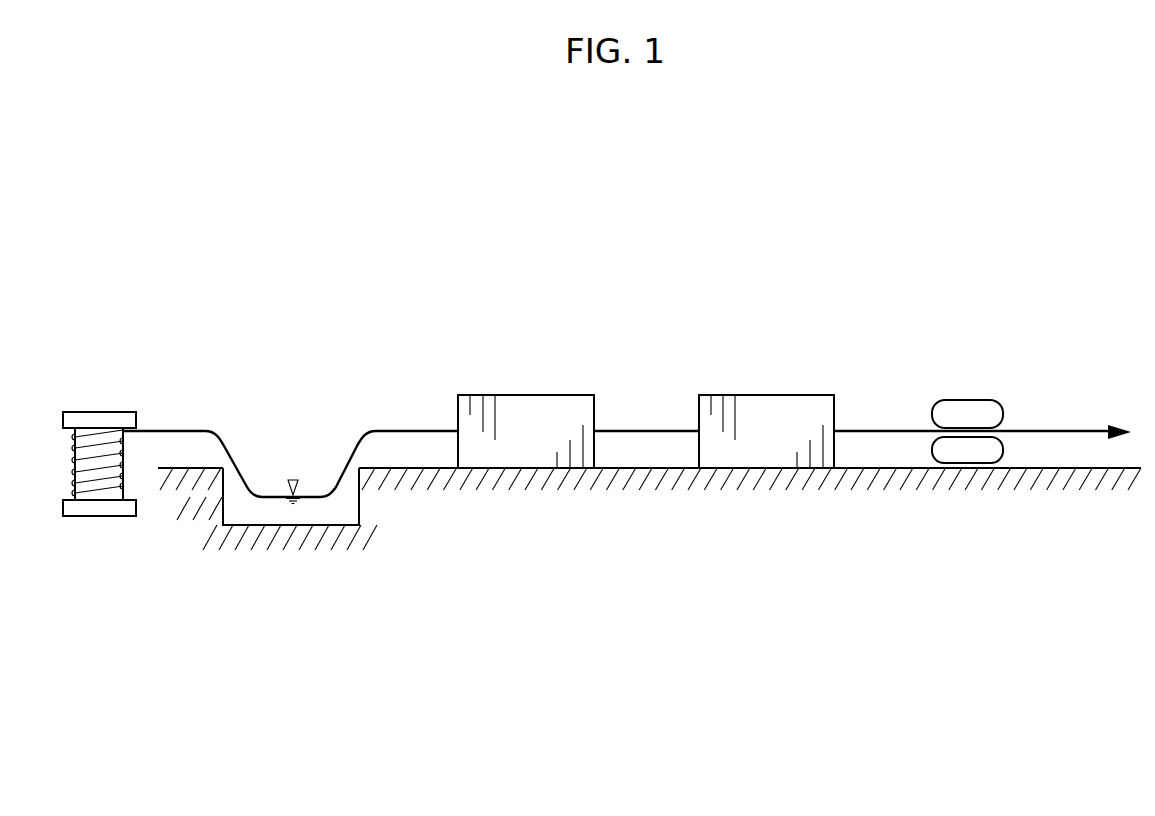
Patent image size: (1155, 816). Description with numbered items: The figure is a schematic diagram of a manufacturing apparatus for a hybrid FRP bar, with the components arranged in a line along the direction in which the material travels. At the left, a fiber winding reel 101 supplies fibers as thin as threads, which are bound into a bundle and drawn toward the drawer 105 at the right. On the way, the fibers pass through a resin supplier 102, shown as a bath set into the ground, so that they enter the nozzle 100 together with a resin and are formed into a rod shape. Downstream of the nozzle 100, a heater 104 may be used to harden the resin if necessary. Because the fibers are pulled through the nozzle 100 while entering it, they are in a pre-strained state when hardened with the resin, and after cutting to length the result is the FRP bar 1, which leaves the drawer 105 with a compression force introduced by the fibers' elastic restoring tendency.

The FRP bar 1 is at (1048, 430).
The nozzle 100 is at (527, 393).
The fiber winding reel 101 is at (100, 411).
The resin supplier 102 is at (358, 495).
The heater 104 is at (767, 393).
The drawer 105 is at (968, 399).